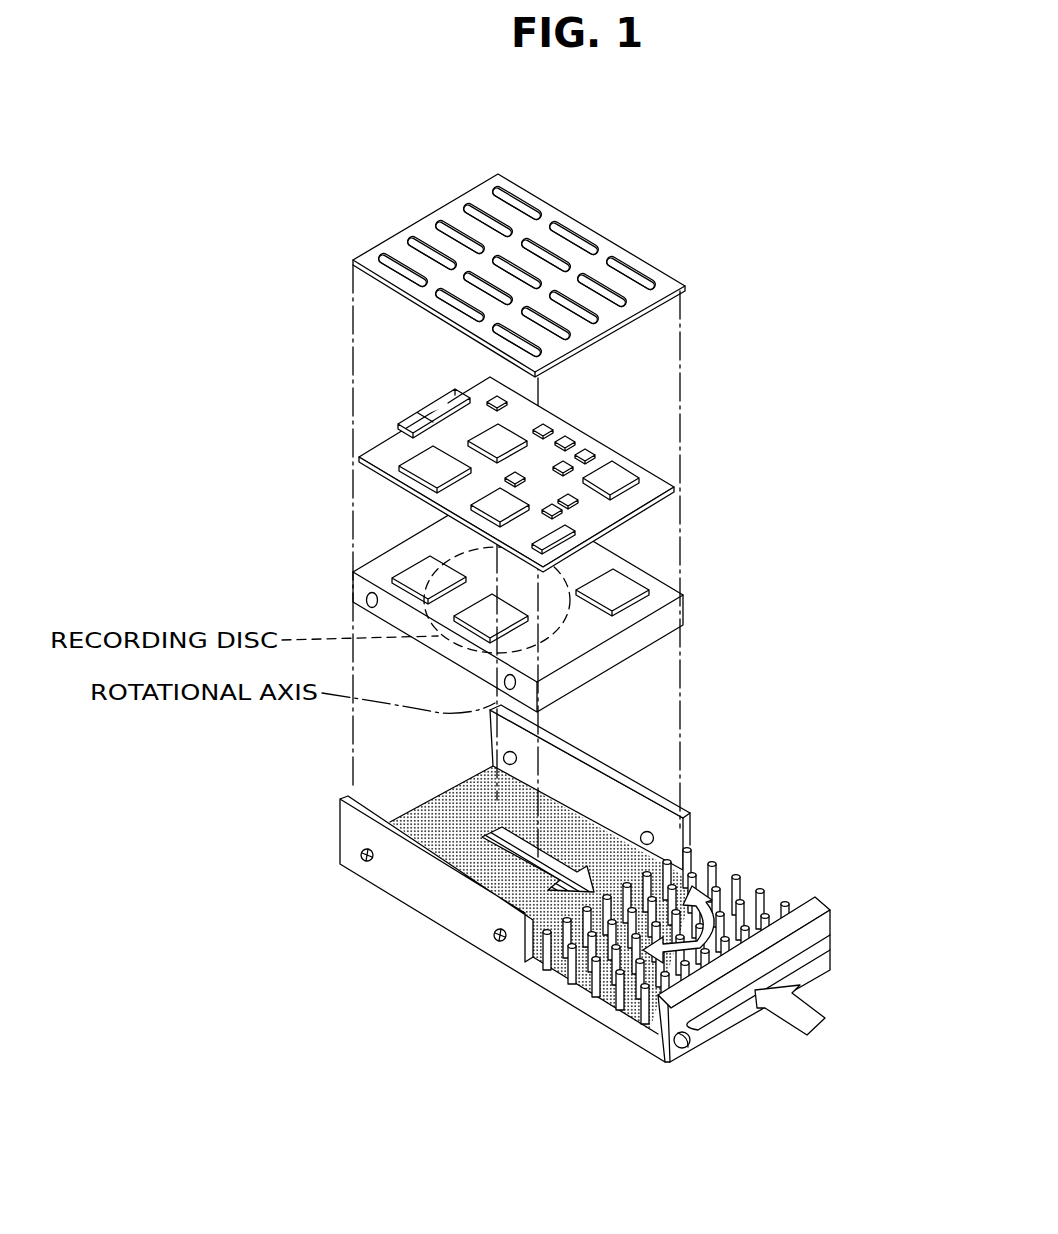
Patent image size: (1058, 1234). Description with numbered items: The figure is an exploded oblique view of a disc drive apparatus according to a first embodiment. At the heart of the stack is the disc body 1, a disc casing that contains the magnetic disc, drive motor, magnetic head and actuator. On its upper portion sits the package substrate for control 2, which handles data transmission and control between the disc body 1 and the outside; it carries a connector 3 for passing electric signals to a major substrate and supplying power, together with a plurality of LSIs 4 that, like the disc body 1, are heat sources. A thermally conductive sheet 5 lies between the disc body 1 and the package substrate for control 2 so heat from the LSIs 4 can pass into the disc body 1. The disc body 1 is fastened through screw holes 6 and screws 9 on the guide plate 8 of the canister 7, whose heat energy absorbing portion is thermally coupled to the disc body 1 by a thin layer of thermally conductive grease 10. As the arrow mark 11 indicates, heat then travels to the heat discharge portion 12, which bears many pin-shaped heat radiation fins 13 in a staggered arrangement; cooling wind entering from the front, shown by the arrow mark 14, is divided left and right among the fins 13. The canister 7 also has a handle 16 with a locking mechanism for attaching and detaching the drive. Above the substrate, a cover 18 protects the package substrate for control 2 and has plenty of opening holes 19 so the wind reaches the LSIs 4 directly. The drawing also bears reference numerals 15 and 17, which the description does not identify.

The disc body 1 is at (680, 618).
The package substrate for control 2 is at (656, 487).
The connector 3 is at (405, 418).
The LSIs 4 is at (430, 465).
The thermally conductive sheet 5 is at (428, 577).
The screw holes 6 is at (366, 601).
The canister 7 is at (641, 800).
The guide plate 8 is at (430, 880).
The screws 9 is at (365, 857).
The thermally conductive grease 10 is at (440, 800).
The arrow mark 11 is at (556, 862).
The heat discharge portion 12 is at (570, 1000).
The heat radiation fins 13 is at (712, 866).
The arrow mark 14 is at (795, 1010).
The air flow arrow 15 is at (730, 882).
The handle 16 is at (815, 921).
The knob 17 is at (684, 1049).
The cover 18 is at (678, 290).
The opening holes 19 is at (443, 228).